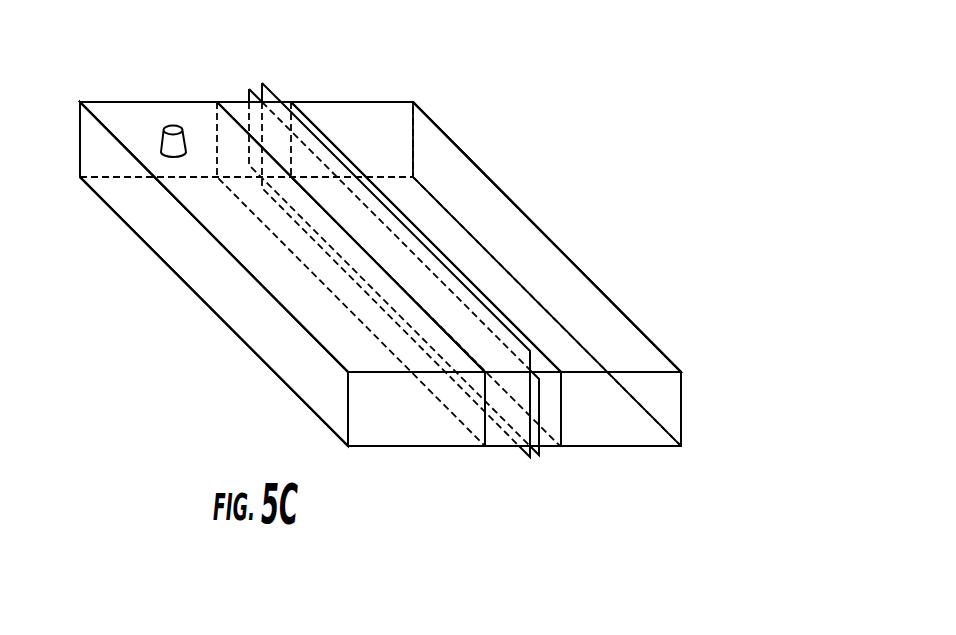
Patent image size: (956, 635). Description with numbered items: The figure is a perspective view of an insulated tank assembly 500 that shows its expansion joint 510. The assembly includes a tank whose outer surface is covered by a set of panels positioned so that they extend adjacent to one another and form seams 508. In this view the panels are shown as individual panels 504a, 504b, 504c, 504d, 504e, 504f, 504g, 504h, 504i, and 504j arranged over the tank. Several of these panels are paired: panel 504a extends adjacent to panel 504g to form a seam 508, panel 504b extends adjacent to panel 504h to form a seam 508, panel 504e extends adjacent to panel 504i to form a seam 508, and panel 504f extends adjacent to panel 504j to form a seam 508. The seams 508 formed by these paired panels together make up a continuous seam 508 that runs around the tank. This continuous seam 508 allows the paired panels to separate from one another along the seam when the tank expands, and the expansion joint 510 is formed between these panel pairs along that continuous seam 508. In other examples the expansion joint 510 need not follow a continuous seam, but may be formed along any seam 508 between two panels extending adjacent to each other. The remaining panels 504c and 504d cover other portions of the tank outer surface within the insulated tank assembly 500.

The insulated tank assembly 500 is at (560, 100).
The panel 504a is at (128, 117).
The panel 504b is at (592, 447).
The panel 504c is at (148, 247).
The panel 504d is at (573, 262).
The panel 504e is at (188, 102).
The panel 504f is at (411, 430).
The panel 504g is at (363, 123).
The panel 504h is at (468, 447).
The panel 504i is at (338, 102).
The panel 504j is at (638, 435).
The seam 508 is at (328, 167).
The expansion joint 510 is at (252, 135).